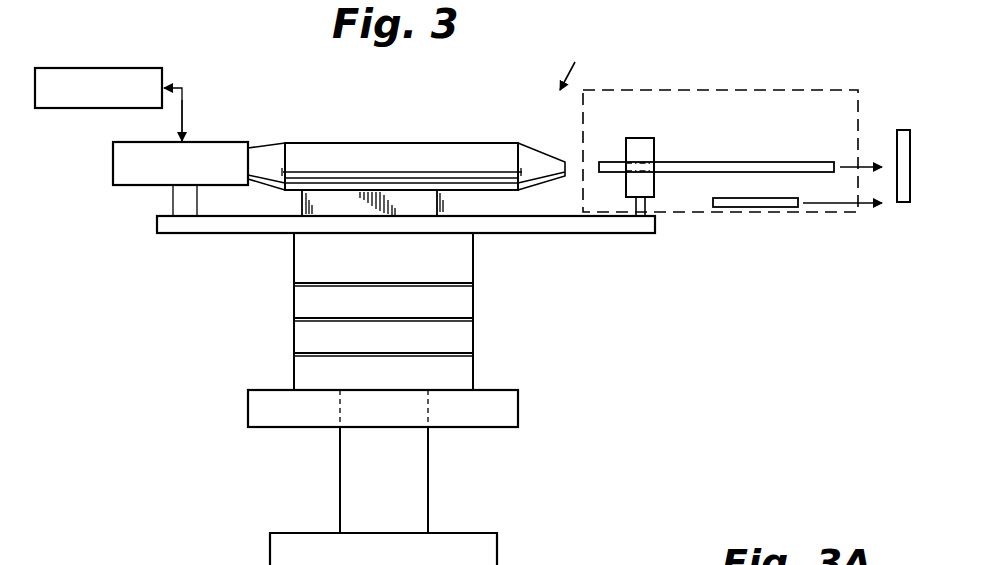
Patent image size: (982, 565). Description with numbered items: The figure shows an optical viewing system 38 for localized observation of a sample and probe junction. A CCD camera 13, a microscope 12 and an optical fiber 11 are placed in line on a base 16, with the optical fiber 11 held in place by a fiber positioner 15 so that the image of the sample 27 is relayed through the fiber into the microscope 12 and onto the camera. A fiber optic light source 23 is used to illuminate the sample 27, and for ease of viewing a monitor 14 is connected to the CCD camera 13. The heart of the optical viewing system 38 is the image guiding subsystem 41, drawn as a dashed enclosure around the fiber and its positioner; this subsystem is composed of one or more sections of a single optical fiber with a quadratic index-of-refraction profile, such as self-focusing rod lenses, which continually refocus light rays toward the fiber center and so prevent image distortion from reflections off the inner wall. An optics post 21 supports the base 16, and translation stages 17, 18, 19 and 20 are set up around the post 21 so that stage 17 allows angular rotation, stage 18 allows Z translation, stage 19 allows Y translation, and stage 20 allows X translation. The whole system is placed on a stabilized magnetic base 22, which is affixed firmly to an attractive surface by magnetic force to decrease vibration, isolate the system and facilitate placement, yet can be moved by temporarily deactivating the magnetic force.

The optical fiber 11 is at (812, 162).
The microscope 12 is at (309, 143).
The CCD camera 13 is at (226, 141).
The monitor 14 is at (117, 67).
The holder 15 is at (641, 138).
The base 16 is at (583, 234).
The translation stage 17 is at (294, 250).
The translation stage 18 is at (294, 303).
The translation stage 19 is at (294, 338).
The translation stage 20 is at (294, 372).
The optics post 21 is at (340, 497).
The magnetic base 22 is at (270, 553).
The fiber optic light source 23 is at (762, 209).
The sample 27 is at (903, 130).
The optical viewing system 38 is at (575, 63).
The image guiding subsystem 41 is at (733, 90).